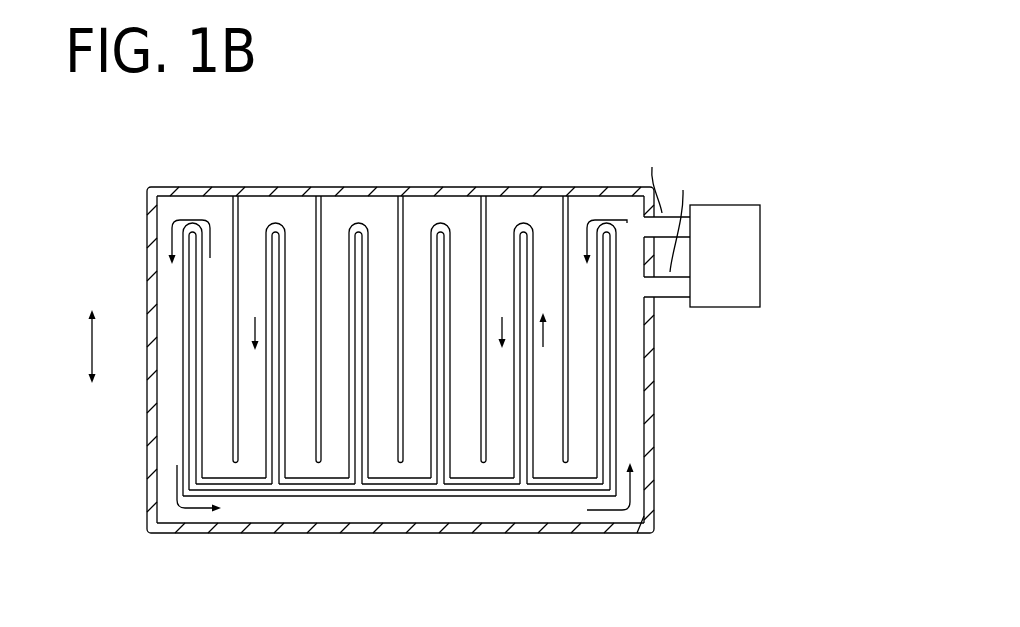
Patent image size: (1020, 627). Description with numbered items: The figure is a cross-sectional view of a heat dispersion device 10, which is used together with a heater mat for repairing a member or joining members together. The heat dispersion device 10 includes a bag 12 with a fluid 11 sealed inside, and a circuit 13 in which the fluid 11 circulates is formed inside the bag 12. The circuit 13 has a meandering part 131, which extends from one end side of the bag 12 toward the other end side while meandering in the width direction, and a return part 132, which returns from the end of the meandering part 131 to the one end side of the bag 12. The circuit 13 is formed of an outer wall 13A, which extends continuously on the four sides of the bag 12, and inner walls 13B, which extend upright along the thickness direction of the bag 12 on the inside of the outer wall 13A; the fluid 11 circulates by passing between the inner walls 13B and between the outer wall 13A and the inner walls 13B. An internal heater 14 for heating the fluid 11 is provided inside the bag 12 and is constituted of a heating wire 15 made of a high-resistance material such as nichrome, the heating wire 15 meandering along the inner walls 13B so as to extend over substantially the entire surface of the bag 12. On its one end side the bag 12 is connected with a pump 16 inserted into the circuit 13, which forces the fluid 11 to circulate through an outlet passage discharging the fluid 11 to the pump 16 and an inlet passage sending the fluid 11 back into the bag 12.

The heat dispersion device 10 is at (590, 80).
The fluid 11 is at (297, 210).
The bag 12 is at (398, 197).
The circuit 13 is at (548, 212).
The outer wall 13A is at (522, 534).
The inner wall 13B is at (183, 424).
The meandering part 131 is at (378, 228).
The return part 132 is at (363, 510).
The internal heater 14 is at (622, 345).
The heating wire 15 is at (243, 498).
The pump 16 is at (730, 203).